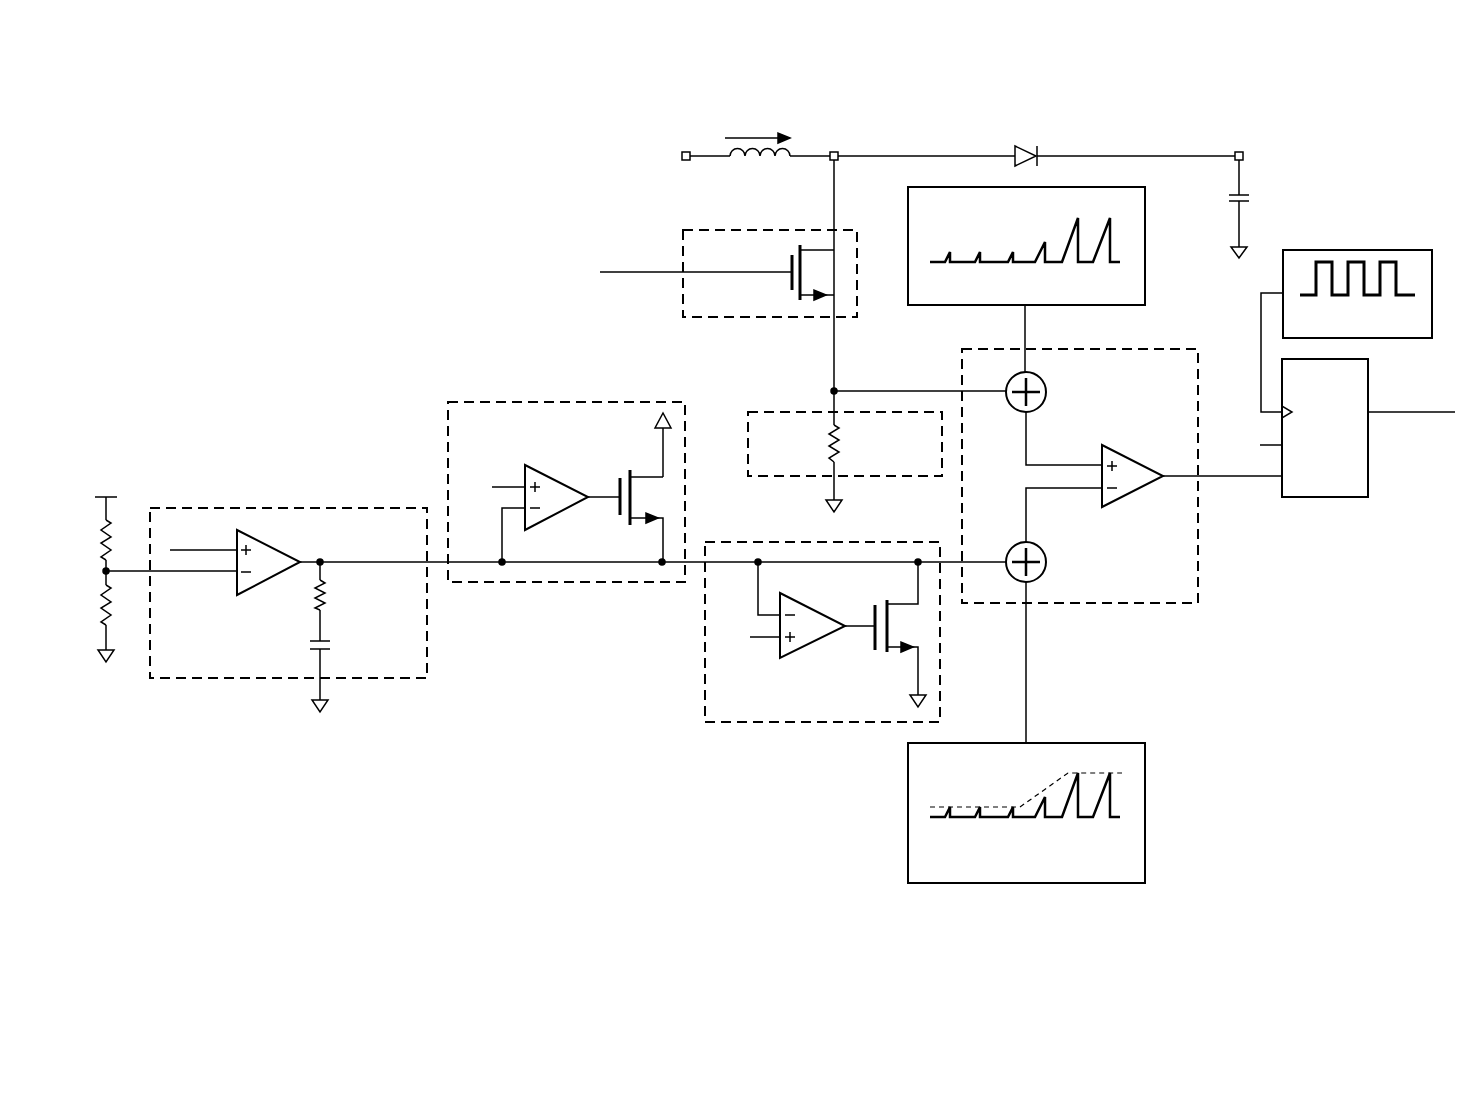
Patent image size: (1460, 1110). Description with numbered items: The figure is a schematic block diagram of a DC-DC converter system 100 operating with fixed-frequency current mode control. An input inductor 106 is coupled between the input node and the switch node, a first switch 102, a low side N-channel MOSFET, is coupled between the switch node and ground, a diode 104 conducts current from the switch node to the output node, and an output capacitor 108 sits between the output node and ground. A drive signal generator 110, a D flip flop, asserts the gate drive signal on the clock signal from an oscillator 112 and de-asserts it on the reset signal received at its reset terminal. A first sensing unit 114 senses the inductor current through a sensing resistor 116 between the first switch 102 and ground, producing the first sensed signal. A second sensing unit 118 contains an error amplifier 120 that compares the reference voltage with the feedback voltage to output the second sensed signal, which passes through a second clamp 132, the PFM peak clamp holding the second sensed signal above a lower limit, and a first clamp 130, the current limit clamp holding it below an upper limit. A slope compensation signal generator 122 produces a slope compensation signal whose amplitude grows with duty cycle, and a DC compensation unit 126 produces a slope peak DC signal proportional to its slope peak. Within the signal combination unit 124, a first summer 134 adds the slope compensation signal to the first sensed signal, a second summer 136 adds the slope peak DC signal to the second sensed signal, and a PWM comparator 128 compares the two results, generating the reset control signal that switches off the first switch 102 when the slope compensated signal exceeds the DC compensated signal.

The DC-DC converter system 100 is at (466, 140).
The first switch 102 is at (683, 288).
The diode 104 is at (1033, 146).
The input inductor 106 is at (757, 167).
The output capacitor 108 is at (1252, 197).
The drive signal generator 110 is at (1325, 497).
The oscillator 112 is at (1358, 250).
The first sensing unit 114 is at (845, 419).
The sensing resistor 116 is at (828, 443).
The second sensing unit 118 is at (288, 624).
The error amplifier 120 is at (268, 583).
The slope compensation signal generator 122 is at (1145, 243).
The signal combination unit 124 is at (1119, 476).
The DC compensation unit 126 is at (1145, 812).
The PWM comparator 128 is at (1133, 497).
The first clamp 130 is at (808, 730).
The second clamp 132 is at (551, 590).
The first summer 134 is at (1013, 409).
The second summer 136 is at (1012, 546).